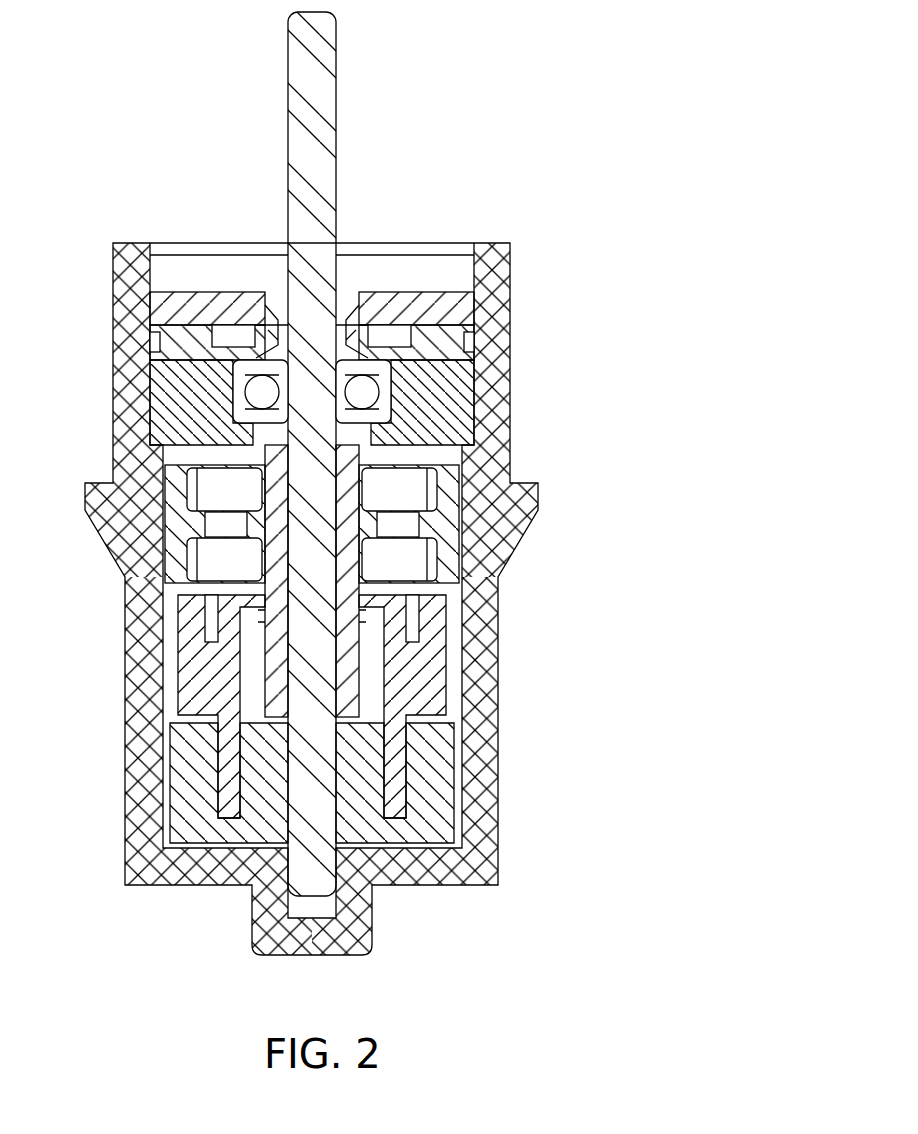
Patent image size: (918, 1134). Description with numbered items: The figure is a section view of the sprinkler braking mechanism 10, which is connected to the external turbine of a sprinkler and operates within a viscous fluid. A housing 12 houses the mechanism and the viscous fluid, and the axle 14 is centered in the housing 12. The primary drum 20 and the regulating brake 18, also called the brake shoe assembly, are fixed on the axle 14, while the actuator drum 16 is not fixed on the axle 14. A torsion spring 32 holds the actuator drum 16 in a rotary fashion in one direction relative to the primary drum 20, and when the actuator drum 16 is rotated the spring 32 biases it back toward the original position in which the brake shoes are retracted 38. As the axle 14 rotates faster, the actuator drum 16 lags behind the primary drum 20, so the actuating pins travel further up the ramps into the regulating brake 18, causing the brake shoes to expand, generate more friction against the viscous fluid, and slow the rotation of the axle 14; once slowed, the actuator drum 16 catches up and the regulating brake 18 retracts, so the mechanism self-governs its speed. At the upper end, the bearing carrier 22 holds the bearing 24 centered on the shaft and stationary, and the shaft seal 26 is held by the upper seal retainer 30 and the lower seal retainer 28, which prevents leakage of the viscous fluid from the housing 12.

The sprinkler braking mechanism 10 is at (699, 358).
The housing 12 is at (487, 797).
The axle 14 is at (295, 80).
The actuator drum 16 is at (193, 802).
The regulating brake 18 is at (428, 683).
The primary drum 20 is at (448, 520).
The bearing carrier 22 is at (190, 397).
The bearing 24 is at (362, 392).
The shaft seal 26 is at (258, 318).
The lower seal retainer 28 is at (180, 340).
The upper seal retainer 30 is at (412, 305).
The torsion spring 32 is at (262, 621).
The retracted brake shoes position 38 is at (560, 721).